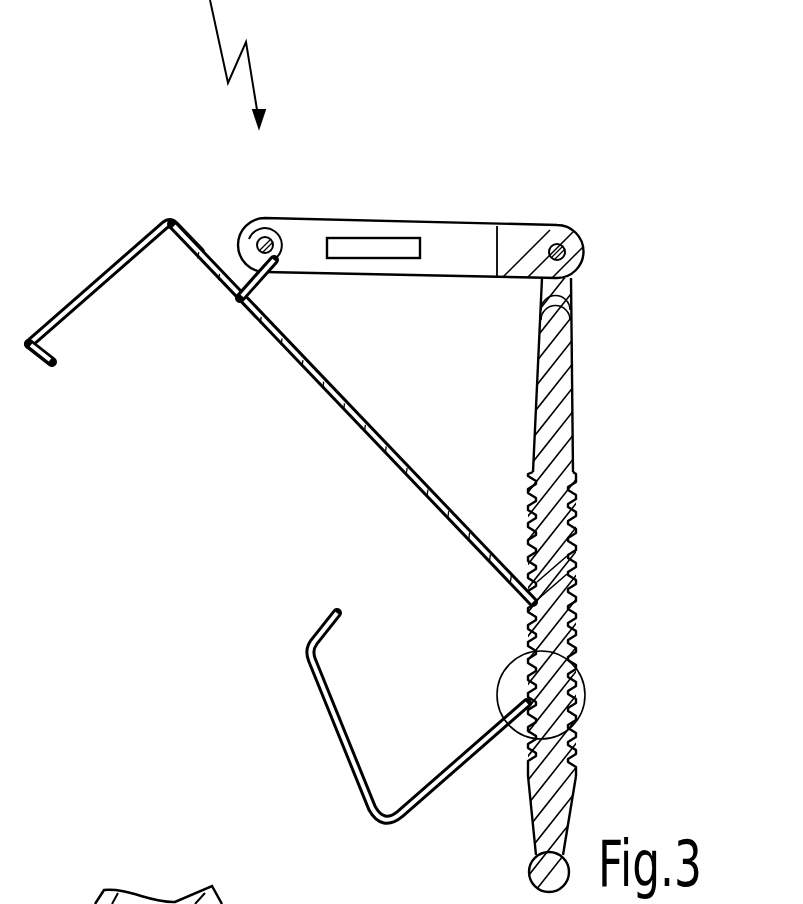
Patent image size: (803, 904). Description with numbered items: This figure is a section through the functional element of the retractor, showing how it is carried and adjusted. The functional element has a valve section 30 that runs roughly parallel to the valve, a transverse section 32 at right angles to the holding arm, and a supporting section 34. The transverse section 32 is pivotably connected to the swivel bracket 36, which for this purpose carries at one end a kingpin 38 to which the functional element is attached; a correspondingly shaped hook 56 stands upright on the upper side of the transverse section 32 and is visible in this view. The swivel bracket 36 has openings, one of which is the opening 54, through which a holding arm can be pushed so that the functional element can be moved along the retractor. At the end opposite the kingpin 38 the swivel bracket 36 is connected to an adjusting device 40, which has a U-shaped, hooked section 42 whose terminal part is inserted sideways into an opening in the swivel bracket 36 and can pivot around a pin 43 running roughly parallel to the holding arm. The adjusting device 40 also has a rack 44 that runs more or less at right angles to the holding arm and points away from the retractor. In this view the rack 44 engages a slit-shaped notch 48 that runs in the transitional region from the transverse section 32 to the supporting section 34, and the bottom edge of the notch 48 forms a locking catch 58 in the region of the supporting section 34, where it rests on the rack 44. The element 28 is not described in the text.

The first retaining arm 28 is at (233, 288).
The valve section 30 is at (86, 303).
The transverse section 32 is at (298, 347).
The supporting section 34 is at (315, 687).
The swivel bracket 36 is at (452, 217).
The kingpin 38 is at (237, 240).
The adjusting device 40 is at (572, 408).
The U-shaped, hooked section 42 is at (560, 295).
The pin 43 is at (553, 226).
The rack 44 is at (576, 532).
The notch 48 is at (577, 568).
The opening 54 is at (368, 240).
The hook 56 is at (240, 264).
The locking catch 58 is at (527, 700).